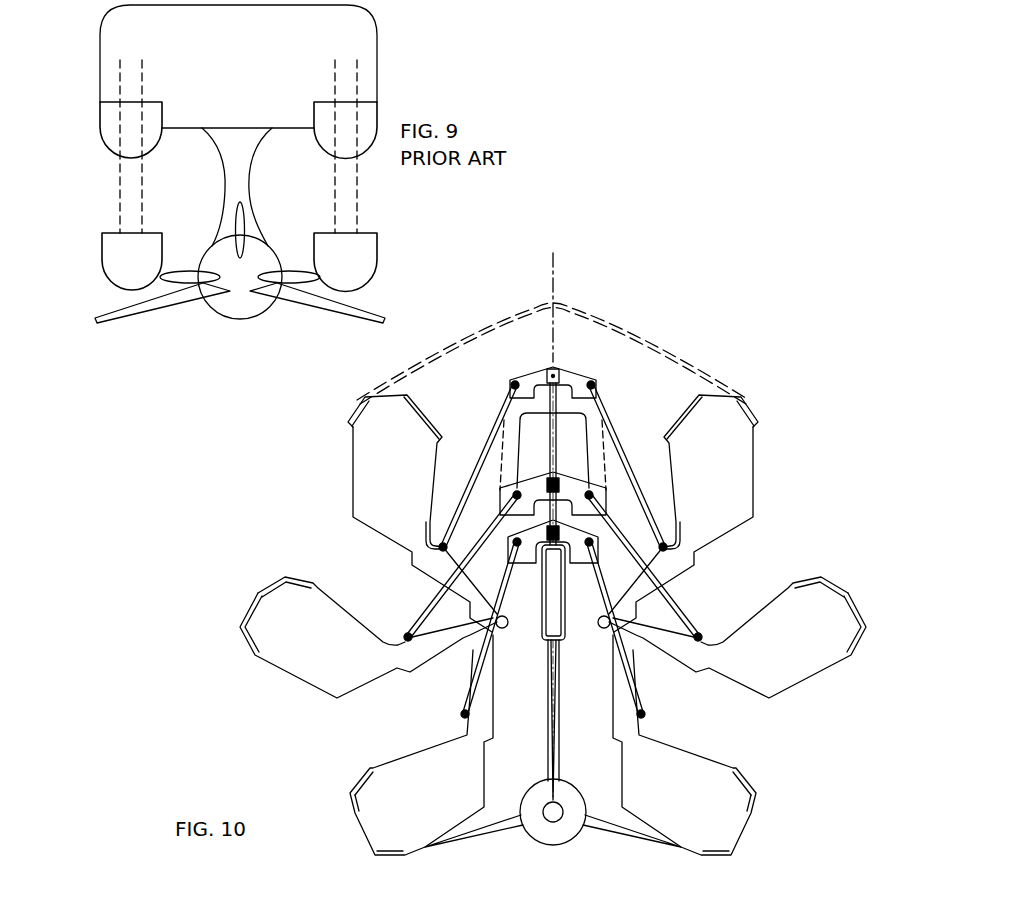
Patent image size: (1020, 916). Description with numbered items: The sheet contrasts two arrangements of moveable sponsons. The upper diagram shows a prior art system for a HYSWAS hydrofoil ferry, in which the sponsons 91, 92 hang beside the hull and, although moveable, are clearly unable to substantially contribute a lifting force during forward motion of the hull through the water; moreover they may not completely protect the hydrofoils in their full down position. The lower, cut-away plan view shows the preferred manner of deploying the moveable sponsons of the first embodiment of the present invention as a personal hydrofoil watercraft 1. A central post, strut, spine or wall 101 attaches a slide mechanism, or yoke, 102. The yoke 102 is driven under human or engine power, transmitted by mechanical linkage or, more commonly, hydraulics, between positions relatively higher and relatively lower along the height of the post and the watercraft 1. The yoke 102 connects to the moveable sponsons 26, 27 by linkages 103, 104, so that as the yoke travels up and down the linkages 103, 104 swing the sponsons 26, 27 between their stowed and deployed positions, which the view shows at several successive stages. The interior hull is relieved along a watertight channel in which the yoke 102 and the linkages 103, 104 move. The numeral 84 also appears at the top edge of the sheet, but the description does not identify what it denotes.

In FIG. 10, the personal hydrofoil watercraft 1 is at (756, 355).
In FIG. 10, the moveable sponson 26 is at (370, 470).
In FIG. 10, the moveable sponson 27 is at (730, 460).
In FIG. 10, the hull member 84 is at (612, 7).
In FIG. 9, the sponson 91 is at (112, 120).
In FIG. 9, the sponson 92 is at (368, 115).
In FIG. 10, the central post 101 is at (568, 412).
In FIG. 10, the yoke 102 is at (577, 373).
In FIG. 10, the linkage 103 is at (495, 423).
In FIG. 10, the linkage 104 is at (617, 432).